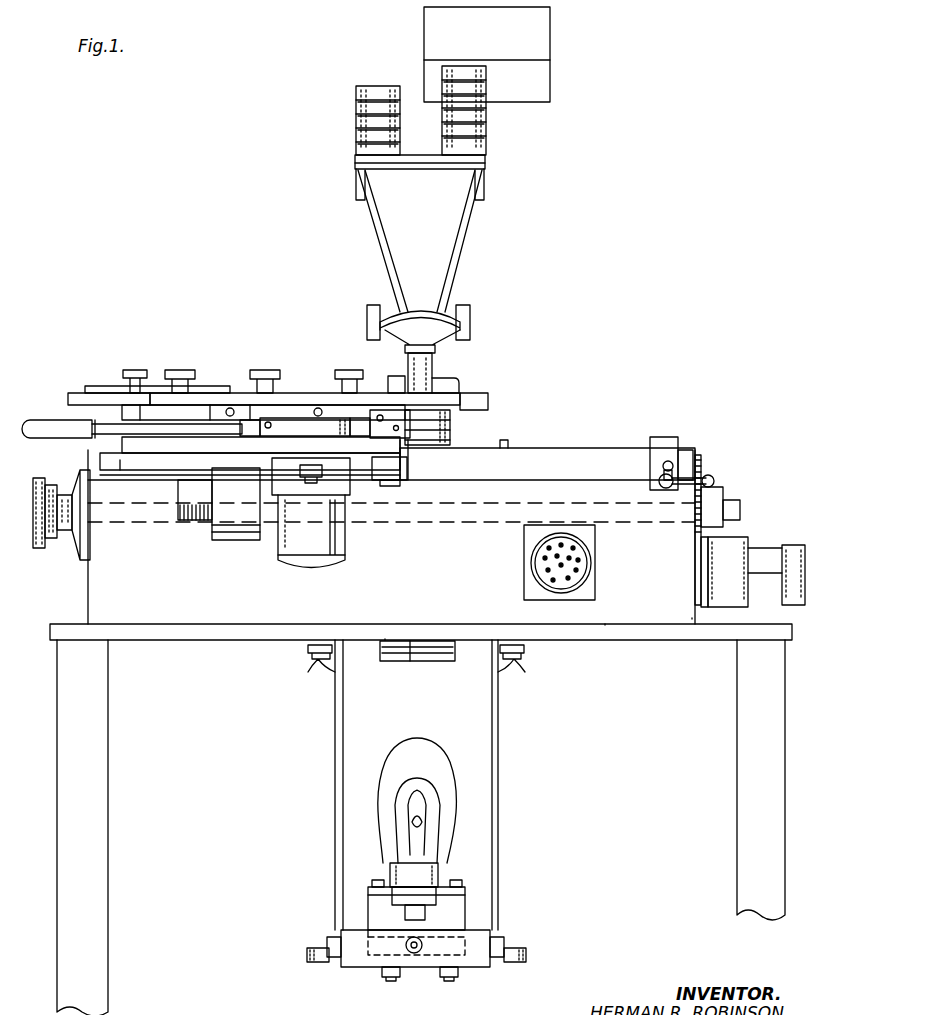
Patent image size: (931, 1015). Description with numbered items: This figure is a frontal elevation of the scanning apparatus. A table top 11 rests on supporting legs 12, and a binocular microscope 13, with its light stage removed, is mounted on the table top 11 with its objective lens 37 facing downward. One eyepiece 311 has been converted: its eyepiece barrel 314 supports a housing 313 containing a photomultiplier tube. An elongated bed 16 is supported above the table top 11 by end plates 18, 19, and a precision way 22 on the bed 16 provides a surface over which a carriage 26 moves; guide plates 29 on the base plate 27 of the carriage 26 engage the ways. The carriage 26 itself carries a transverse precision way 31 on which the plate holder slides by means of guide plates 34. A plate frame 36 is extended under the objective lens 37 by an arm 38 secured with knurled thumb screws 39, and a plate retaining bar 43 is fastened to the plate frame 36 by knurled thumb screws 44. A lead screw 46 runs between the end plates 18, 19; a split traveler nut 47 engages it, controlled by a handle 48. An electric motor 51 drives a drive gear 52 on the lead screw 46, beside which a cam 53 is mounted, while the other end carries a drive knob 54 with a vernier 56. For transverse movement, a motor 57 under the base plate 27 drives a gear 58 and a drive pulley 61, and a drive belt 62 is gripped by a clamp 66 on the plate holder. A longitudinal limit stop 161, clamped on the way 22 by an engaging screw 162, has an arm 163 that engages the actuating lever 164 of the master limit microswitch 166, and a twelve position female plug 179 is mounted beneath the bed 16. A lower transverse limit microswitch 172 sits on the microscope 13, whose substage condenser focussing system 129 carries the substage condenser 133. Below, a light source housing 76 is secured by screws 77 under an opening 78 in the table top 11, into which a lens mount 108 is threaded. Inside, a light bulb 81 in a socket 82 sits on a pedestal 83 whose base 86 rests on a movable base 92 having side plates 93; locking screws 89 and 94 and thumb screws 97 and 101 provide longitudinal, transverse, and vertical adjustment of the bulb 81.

The housing 313 is at (424, 20).
The eyepiece barrel 314 is at (488, 116).
The eyepiece 311 is at (506, 151).
The binocular microscope 13 is at (482, 260).
The objective lens 37 is at (432, 365).
The lower transverse limit microswitch 172 is at (455, 385).
The plate retaining bar 43 is at (88, 388).
The plate frame 36 is at (70, 397).
The arm 38 is at (240, 393).
The knurled thumb screws 44 is at (132, 370).
The knurled thumb screws 39 is at (182, 370).
The drive pulley 61 is at (300, 406).
The drive belt 62 is at (322, 430).
The clamp 66 is at (270, 430).
The guide plates 34 is at (392, 446).
The precision way 31 is at (370, 425).
The substage condenser 133 is at (450, 430).
The handle 48 is at (75, 432).
The base plate 27 is at (205, 448).
The carriage 26 is at (140, 477).
The guide plates 29 is at (120, 472).
The end plate 19 is at (88, 600).
The precision way 22 is at (562, 456).
The substage condenser focussing system 129 is at (505, 442).
The actuating lever 164 is at (408, 468).
The longitudinal master limit microswitch 166 is at (400, 485).
The gear 58 is at (340, 478).
The lead screw 46 is at (182, 518).
The split traveler nut 47 is at (250, 542).
The motor 57 is at (345, 545).
The twelve position female plug 179 is at (532, 572).
The longitudinal limit stop 161 is at (662, 437).
The arm 163 is at (652, 480).
The engaging screw 162 is at (670, 490).
The drive gear 52 is at (702, 462).
The cam 53 is at (723, 495).
The electric motor 51 is at (768, 548).
The vernier 56 is at (84, 562).
The drive knob 54 is at (40, 550).
The table top 11 is at (205, 642).
The opening 78 is at (390, 628).
The bed 16 is at (605, 630).
The end plate 18 is at (692, 620).
The supporting legs 12 is at (110, 880).
The light source housing 76 is at (335, 798).
The screws 77 is at (318, 665).
The mount 108 is at (408, 661).
The light bulb 81 is at (440, 757).
The socket 82 is at (393, 872).
The pedestal 83 is at (470, 896).
The movable base 92 is at (462, 968).
The base 86 is at (443, 933).
The side plates 93 is at (358, 937).
The thumb screws 101 is at (414, 954).
The locking screws 89 is at (380, 972).
The locking screws 94 is at (330, 937).
The thumb screws 97 is at (307, 955).